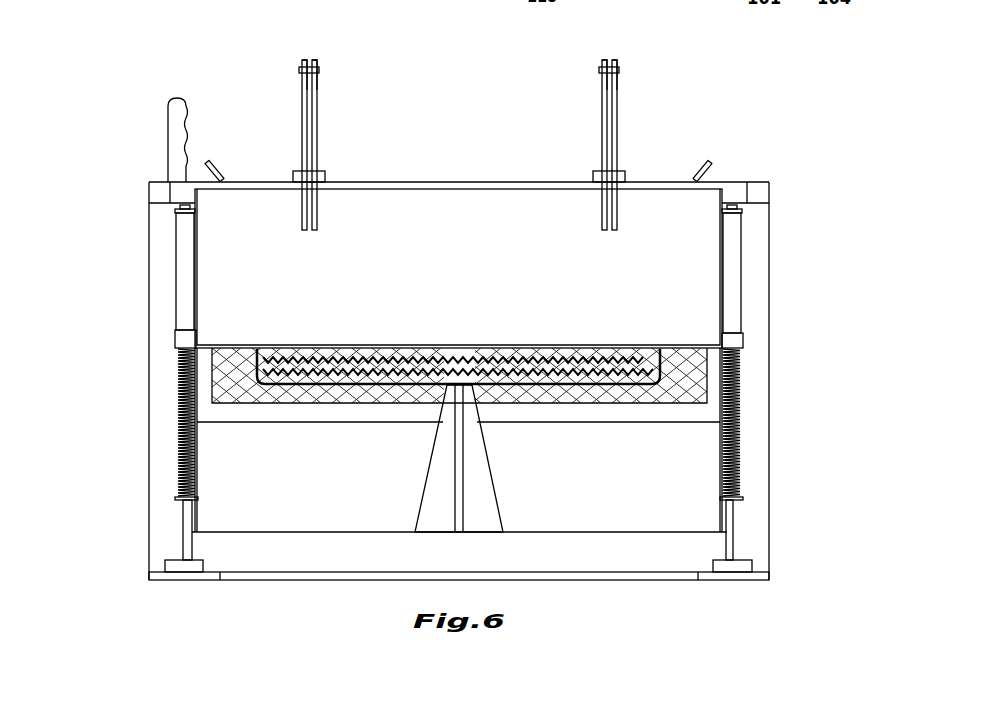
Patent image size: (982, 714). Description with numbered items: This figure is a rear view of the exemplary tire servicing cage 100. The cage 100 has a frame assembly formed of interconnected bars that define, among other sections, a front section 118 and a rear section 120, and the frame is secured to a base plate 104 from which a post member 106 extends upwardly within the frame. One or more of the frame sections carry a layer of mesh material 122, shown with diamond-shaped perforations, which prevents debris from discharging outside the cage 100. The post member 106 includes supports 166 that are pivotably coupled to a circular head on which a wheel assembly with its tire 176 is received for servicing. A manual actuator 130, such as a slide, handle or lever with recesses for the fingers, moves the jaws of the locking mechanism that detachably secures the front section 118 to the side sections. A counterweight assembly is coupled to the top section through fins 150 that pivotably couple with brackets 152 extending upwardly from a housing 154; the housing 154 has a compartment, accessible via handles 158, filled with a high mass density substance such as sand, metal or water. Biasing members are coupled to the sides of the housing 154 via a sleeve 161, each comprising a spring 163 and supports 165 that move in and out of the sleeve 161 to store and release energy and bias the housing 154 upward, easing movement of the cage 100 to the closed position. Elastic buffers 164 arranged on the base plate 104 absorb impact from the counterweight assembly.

The tire servicing cage 100 is at (183, 66).
The base plate 104 is at (645, 573).
The post member 106 is at (514, 491).
The front section 118 is at (285, 418).
The rear section 120 is at (355, 563).
The mesh material 122 is at (680, 385).
The manual actuator 130 is at (170, 115).
The fins 150 is at (310, 60).
The brackets 152 is at (317, 133).
The housing 154 is at (475, 281).
The handles 158 is at (207, 162).
The sleeve 161 is at (180, 263).
The spring 163 is at (180, 412).
The buffers 164 is at (165, 563).
The supports 165 is at (183, 502).
The supports 166 is at (428, 497).
The tire 176 is at (598, 367).